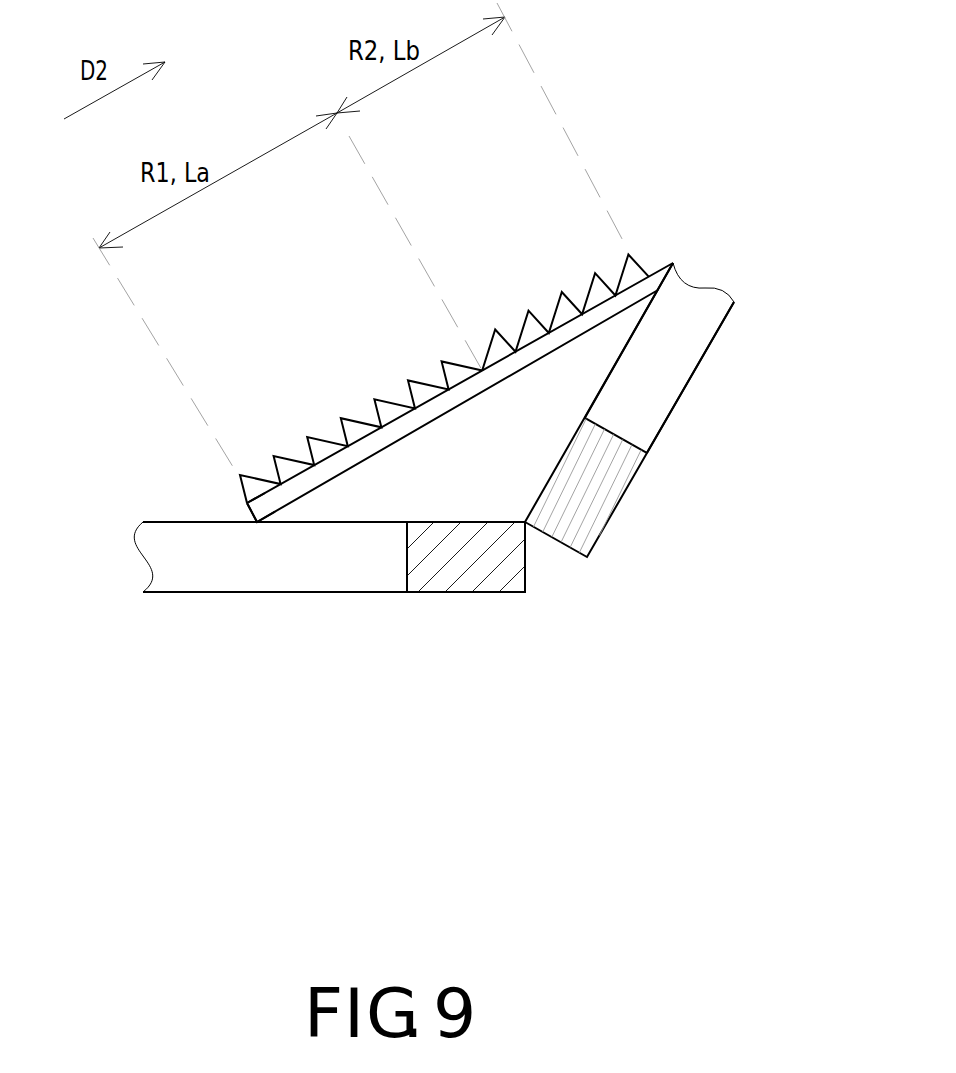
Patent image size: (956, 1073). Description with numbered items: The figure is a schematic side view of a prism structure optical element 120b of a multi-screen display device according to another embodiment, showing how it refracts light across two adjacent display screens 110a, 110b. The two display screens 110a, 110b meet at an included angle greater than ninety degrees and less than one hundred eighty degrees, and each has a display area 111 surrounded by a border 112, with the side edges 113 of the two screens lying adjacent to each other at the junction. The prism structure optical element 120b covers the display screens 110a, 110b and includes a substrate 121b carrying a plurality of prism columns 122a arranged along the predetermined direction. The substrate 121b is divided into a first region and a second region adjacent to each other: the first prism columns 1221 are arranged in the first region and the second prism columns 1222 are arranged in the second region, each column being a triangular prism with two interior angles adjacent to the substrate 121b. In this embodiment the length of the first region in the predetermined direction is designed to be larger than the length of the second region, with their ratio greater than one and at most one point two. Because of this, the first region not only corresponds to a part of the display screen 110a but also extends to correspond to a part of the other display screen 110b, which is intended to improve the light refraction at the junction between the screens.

The display screen 110a is at (435, 683).
The display screen 110b is at (765, 673).
The display area 111 is at (325, 572).
The border 112 is at (511, 555).
The side edge 113 is at (442, 580).
The prism structure optical element 120b is at (228, 499).
The substrate 121b is at (549, 345).
The prism column 122a is at (435, 353).
The first prism column 1221 is at (238, 482).
The second prism column 1222 is at (636, 255).